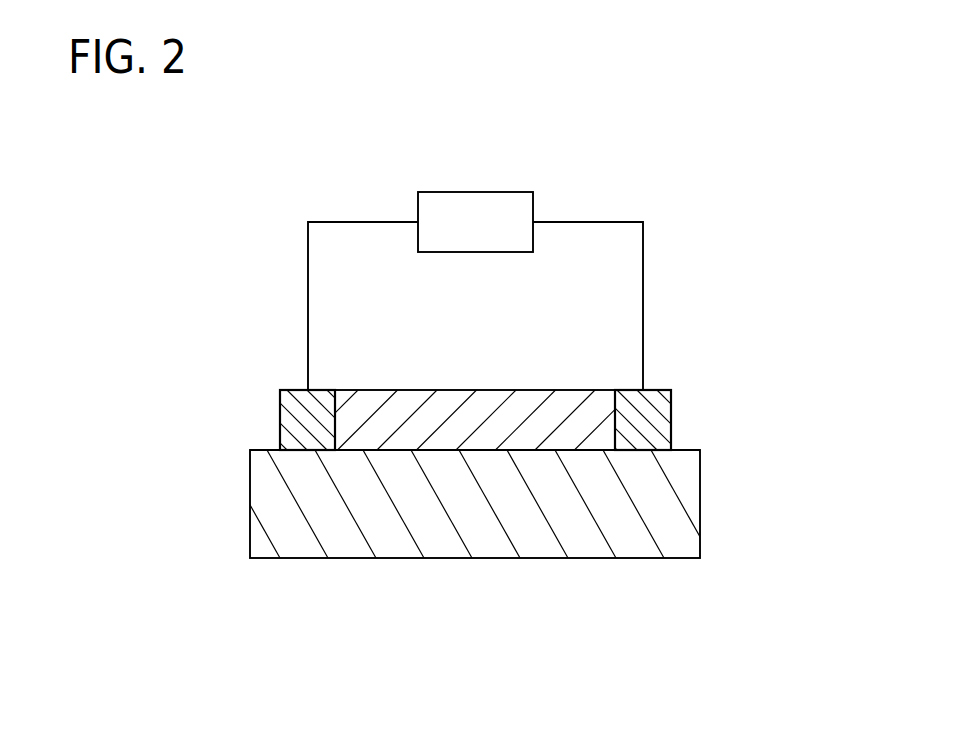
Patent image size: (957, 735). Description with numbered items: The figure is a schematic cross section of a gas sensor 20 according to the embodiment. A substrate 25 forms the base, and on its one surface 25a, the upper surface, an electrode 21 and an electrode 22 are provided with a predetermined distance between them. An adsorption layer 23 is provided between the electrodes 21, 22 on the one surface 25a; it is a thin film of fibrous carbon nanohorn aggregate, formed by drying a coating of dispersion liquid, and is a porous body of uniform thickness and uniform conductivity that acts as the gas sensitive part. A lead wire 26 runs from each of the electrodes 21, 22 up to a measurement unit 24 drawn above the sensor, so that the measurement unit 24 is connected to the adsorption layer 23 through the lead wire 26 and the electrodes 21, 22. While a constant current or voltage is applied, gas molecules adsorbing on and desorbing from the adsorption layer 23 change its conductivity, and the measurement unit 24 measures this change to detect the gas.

The gas sensor 20 is at (778, 216).
The electrode 21 is at (672, 403).
The electrode 22 is at (280, 420).
The adsorption layer 23 is at (492, 390).
The measurement unit 24 is at (473, 192).
The substrate 25 is at (700, 497).
The one surface 25a is at (683, 448).
The lead wire 26 is at (308, 302).